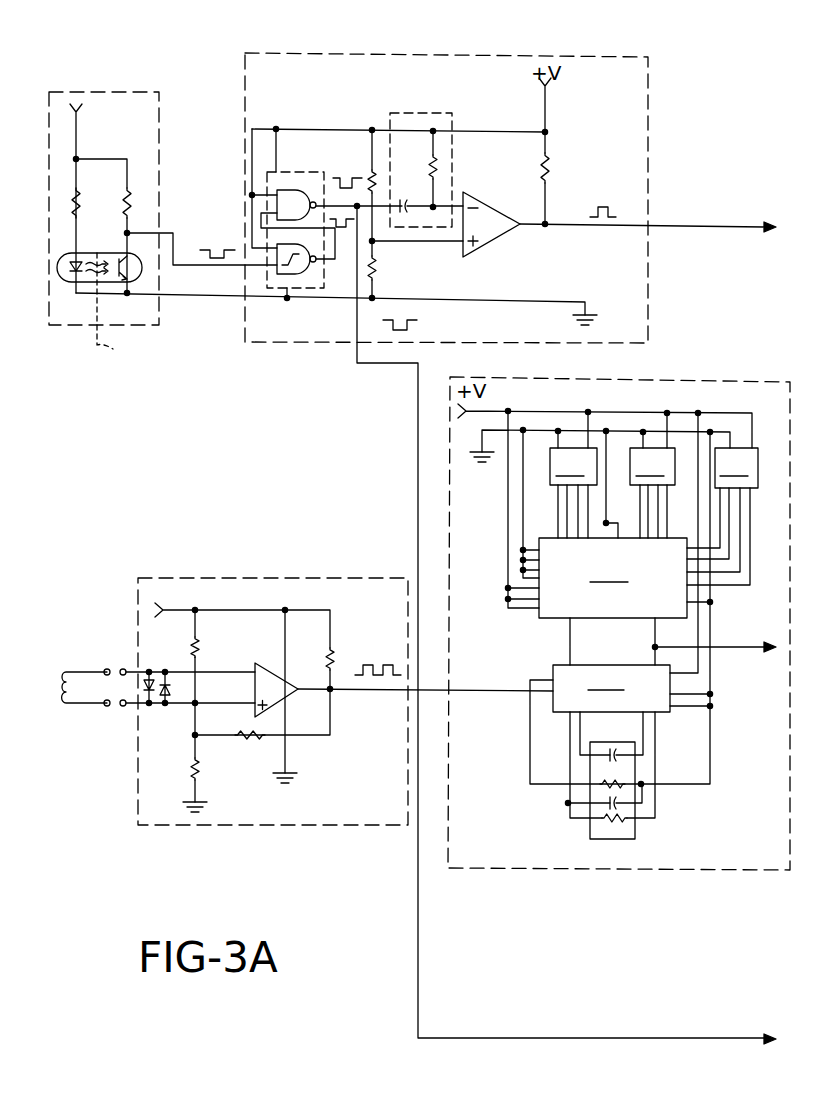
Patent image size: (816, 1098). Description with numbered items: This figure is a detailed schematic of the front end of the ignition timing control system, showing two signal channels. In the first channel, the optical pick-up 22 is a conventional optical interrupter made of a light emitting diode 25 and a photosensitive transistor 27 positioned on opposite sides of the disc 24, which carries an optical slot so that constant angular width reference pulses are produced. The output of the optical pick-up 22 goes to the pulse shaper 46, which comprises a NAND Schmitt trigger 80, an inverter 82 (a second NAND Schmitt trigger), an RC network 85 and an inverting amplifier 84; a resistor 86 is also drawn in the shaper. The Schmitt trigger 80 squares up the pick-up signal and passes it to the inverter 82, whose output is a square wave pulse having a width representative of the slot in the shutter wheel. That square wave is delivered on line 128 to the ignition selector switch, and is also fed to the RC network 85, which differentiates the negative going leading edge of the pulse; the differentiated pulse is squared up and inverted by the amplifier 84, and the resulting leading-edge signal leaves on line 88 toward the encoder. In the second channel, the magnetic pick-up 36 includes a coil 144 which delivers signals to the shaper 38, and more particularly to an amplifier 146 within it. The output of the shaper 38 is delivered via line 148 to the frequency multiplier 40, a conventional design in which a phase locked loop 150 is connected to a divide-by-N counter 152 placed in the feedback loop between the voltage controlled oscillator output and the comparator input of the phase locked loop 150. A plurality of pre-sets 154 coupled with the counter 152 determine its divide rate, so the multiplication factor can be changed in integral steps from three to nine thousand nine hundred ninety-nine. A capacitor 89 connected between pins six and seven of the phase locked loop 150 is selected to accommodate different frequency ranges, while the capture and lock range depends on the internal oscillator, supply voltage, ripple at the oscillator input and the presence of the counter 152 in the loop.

The optical pick-up 22 is at (143, 91).
The disc 24 is at (102, 308).
The light emitting diode 25 is at (79, 262).
The photosensitive transistor 27 is at (143, 274).
The pulse shaper 46 is at (478, 35).
The NAND Schmitt trigger 80 is at (298, 235).
The inverter (second NAND Schmitt trigger) 82 is at (299, 183).
The inverting amplifier 84 is at (492, 237).
The RC network 85 is at (403, 113).
The resistor 86 is at (378, 273).
The line 88 is at (708, 222).
The line 128 is at (418, 440).
The shaper 38 is at (260, 578).
The coil 144 is at (62, 672).
The magnetic pick-up 36 is at (73, 705).
The amplifier 146 is at (250, 663).
The line 148 is at (360, 693).
The frequency multiplier 40 is at (528, 868).
The divide-by-N counter 152 is at (613, 578).
The pre-sets 154 is at (654, 498).
The phase locked loop 150 is at (611, 689).
The capacitor 89 is at (617, 738).